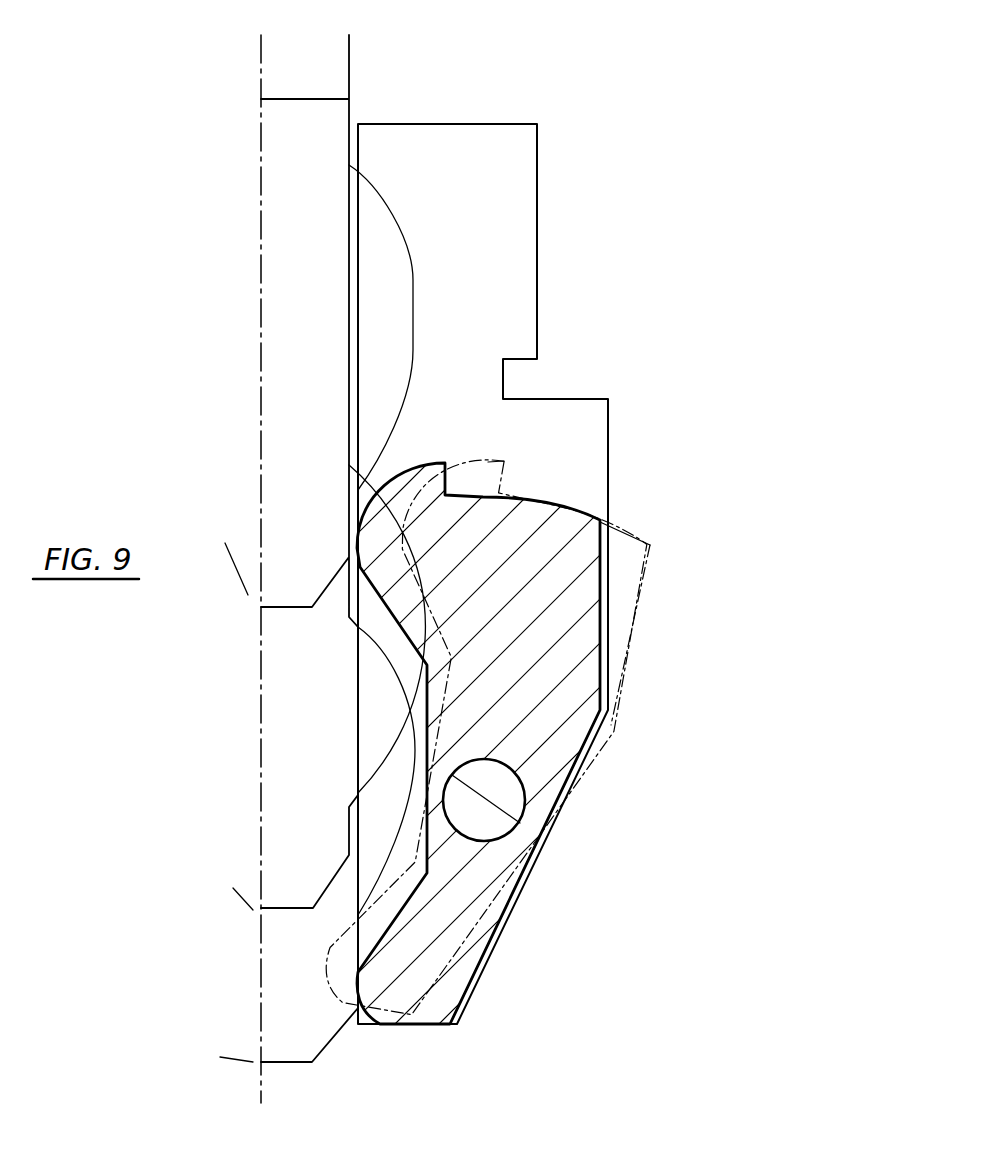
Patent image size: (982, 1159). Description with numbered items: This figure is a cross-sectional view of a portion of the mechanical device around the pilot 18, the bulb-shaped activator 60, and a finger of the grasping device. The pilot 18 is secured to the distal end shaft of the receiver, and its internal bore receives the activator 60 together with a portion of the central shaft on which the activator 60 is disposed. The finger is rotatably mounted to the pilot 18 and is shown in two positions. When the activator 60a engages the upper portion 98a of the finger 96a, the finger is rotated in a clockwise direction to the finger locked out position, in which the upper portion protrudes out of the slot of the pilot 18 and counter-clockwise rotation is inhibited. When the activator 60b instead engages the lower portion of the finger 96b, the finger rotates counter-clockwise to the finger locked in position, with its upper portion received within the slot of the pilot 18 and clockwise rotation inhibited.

The pilot 18 is at (550, 222).
The activator 60 is at (393, 207).
The activator 60a is at (237, 877).
The activator 60b is at (285, 1050).
The finger 96a is at (643, 645).
The finger 96b is at (508, 938).
The upper portion 98a is at (650, 545).